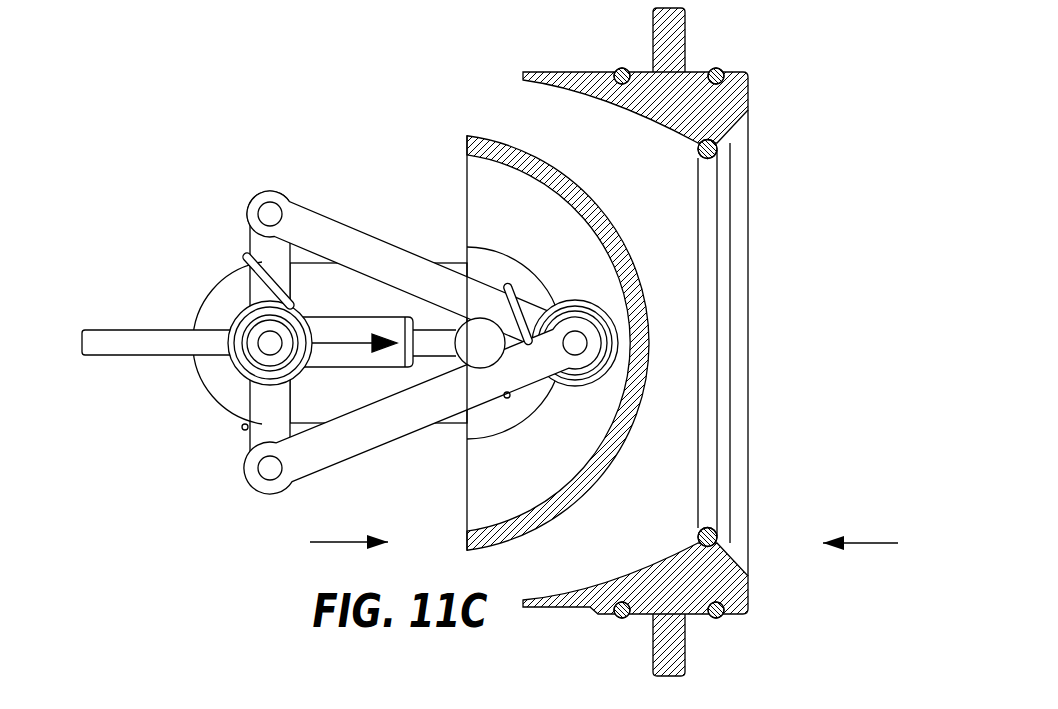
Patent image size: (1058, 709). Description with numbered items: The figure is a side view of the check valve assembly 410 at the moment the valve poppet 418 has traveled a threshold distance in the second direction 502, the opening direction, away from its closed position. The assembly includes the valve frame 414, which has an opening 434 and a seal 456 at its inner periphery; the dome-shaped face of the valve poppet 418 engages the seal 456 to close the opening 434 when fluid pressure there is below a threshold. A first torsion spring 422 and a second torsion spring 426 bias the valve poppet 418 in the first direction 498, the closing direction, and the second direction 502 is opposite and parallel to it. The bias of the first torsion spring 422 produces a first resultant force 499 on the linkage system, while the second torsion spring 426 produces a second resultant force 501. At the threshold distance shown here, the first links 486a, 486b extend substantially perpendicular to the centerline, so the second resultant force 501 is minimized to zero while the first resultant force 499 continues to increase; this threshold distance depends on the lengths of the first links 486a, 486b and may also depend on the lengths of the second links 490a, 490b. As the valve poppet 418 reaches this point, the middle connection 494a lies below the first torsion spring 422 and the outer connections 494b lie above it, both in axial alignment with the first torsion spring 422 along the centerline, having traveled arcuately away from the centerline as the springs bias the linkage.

The check valve assembly 410 is at (197, 137).
The valve frame 414 is at (758, 60).
The valve poppet 418 is at (805, 193).
The first torsion spring 422 is at (238, 312).
The second torsion spring 426 is at (587, 387).
The opening 434 is at (668, 168).
The seal 456 is at (705, 280).
The first link 486a is at (263, 400).
The first link 486b is at (263, 250).
The second link 490a is at (395, 415).
The second link 490b is at (368, 255).
The middle connection 494a is at (268, 468).
The outer connections 494b is at (267, 212).
The first direction 498 is at (350, 540).
The first resultant force 499 is at (350, 325).
The second resultant force 501 is at (472, 335).
The second direction 502 is at (860, 540).